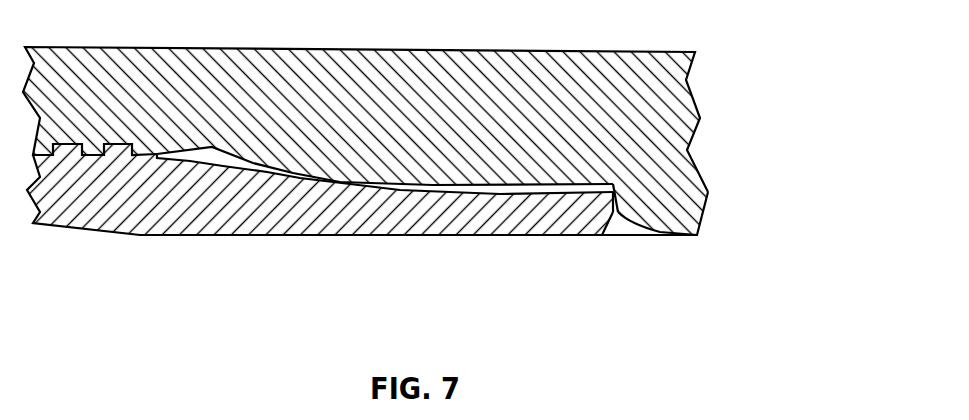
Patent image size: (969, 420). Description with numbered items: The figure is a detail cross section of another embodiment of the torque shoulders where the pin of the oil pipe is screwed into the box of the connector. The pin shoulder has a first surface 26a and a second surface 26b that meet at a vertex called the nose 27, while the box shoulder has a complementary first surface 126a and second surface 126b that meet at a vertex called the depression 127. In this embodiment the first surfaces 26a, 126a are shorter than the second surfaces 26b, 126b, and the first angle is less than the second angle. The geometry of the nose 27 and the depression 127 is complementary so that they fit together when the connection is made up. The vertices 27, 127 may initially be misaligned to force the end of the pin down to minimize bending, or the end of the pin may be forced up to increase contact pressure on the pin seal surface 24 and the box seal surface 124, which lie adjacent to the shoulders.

The pin seal surface 24 is at (385, 224).
The box seal surface 124 is at (298, 190).
The first surface 26a is at (743, 169).
The first surface 126a is at (620, 207).
The second surface 26b is at (643, 261).
The second surface 126b is at (628, 235).
The nose 27 is at (750, 222).
The depression 127 is at (697, 235).